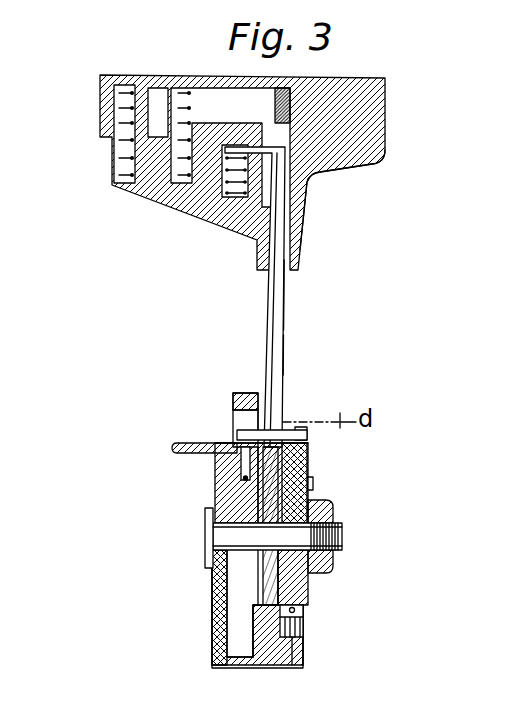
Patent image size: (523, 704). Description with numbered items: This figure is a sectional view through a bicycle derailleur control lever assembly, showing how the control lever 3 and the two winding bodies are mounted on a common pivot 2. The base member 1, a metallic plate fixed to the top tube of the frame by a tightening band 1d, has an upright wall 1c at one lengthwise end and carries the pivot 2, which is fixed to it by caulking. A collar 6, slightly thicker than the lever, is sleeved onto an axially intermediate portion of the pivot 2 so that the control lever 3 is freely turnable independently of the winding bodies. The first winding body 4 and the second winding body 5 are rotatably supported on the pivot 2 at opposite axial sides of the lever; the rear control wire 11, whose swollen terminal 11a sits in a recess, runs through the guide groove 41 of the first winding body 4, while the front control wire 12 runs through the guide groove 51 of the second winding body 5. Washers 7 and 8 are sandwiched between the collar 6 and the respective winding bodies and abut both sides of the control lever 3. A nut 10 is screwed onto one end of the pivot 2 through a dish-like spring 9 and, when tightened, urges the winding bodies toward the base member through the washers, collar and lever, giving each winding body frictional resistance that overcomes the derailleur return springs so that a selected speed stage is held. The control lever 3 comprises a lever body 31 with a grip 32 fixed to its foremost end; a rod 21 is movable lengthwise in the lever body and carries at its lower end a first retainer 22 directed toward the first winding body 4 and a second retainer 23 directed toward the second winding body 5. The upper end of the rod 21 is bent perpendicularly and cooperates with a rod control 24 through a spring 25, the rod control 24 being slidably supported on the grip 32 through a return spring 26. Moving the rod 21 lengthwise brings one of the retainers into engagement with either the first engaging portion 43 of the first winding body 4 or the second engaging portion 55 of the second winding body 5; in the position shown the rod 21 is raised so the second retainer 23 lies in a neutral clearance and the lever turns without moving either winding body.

The base member 1 is at (213, 605).
The upright wall 1c is at (267, 648).
The tightening band 1d is at (220, 583).
The pivot 2 is at (343, 540).
The control lever 3 is at (285, 318).
The first winding body 4 is at (309, 448).
The second winding body 5 is at (233, 397).
The collar 6 is at (303, 493).
The washer 7 is at (290, 470).
The washer 8 is at (257, 497).
The dish-like spring 9 is at (333, 512).
The nut 10 is at (343, 522).
The rear control wire 11 is at (305, 612).
The swollen terminal 11a is at (307, 620).
The front control wire 12 is at (240, 480).
The rod 21 is at (283, 286).
The first retainer 22 is at (302, 420).
The second retainer 23 is at (243, 436).
The rod control 24 is at (113, 165).
The spring 25 is at (222, 205).
The return spring 26 is at (155, 134).
The lever body 31 is at (286, 353).
The grip 32 is at (310, 194).
The guide groove 41 is at (292, 640).
The first engaging portion 43 is at (300, 428).
The guide groove 51 is at (226, 455).
The second engaging portion 55 is at (240, 414).